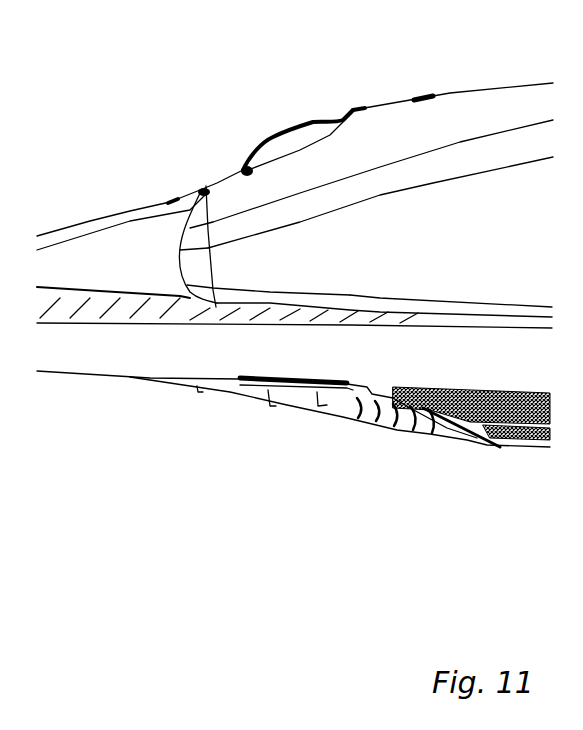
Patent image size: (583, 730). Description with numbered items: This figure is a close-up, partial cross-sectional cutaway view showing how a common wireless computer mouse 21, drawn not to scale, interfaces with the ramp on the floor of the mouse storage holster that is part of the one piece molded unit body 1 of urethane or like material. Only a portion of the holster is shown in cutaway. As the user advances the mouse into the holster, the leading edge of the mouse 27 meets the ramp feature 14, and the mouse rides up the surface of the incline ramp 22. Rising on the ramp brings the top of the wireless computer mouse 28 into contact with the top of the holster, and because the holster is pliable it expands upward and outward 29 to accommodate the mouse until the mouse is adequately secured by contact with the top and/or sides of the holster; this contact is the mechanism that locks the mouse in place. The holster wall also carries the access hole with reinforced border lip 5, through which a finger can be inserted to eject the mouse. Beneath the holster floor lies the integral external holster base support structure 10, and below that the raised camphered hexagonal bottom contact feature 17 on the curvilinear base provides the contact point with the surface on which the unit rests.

The one piece molded unit body 1 is at (97, 345).
The access hole with reinforced border lip 5 is at (243, 172).
The integral external holster base support structure 10 is at (387, 410).
The ramp feature 14 is at (348, 322).
The raised camphered hexagonal bottom contact feature 17 is at (518, 430).
The common wireless computer mouse 21 is at (333, 257).
The surface of incline ramp 22 is at (183, 295).
The leading edge of mouse 27 is at (206, 186).
The top of wireless computer mouse 28 is at (423, 97).
The pliable mouse storage holster expansion 29 is at (172, 198).